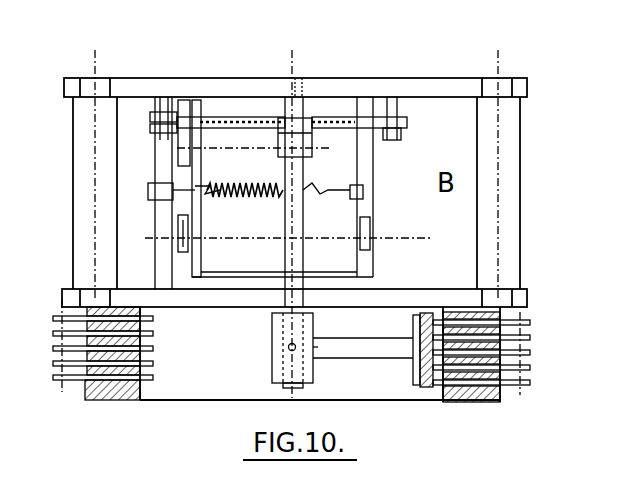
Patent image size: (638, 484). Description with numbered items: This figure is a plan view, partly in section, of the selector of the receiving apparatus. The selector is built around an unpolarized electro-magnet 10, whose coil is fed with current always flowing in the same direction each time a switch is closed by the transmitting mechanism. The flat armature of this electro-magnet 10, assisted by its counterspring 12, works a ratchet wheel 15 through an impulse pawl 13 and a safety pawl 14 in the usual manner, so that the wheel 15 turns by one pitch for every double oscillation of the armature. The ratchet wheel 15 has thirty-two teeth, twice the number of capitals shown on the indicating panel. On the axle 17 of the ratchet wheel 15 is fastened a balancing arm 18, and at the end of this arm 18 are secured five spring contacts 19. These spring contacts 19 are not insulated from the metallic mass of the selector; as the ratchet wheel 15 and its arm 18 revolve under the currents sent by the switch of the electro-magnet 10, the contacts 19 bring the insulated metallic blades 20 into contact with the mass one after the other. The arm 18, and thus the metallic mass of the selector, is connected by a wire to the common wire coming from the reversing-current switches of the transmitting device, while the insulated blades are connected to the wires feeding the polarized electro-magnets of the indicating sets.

The unpolarized electro-magnet 10 is at (345, 175).
The counterspring 12 is at (235, 198).
The impulse pawl 13 is at (213, 117).
The safety pawl 14 is at (336, 127).
The ratchet wheel 15 is at (277, 130).
The axle 17 is at (292, 257).
The balancing arm 18 is at (390, 346).
The spring contacts 19 is at (431, 313).
The insulated metallic blades 20 is at (532, 383).